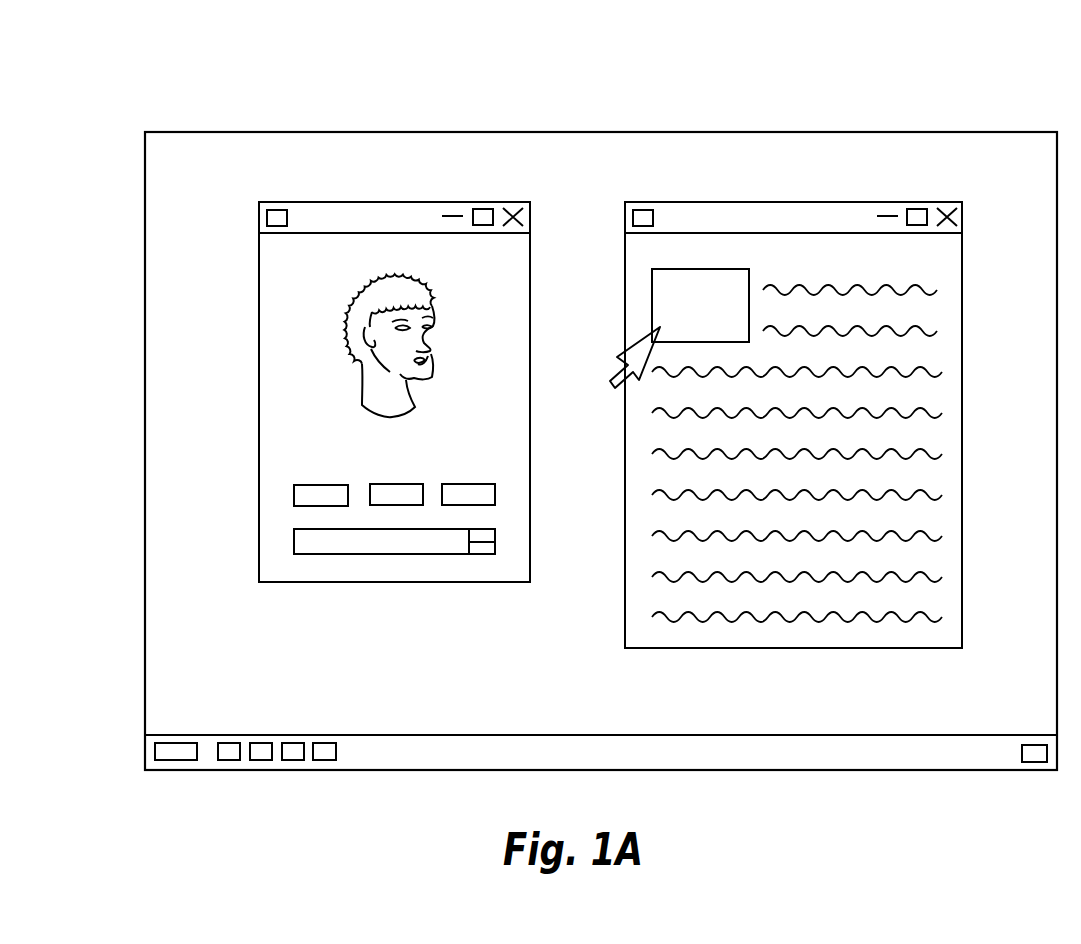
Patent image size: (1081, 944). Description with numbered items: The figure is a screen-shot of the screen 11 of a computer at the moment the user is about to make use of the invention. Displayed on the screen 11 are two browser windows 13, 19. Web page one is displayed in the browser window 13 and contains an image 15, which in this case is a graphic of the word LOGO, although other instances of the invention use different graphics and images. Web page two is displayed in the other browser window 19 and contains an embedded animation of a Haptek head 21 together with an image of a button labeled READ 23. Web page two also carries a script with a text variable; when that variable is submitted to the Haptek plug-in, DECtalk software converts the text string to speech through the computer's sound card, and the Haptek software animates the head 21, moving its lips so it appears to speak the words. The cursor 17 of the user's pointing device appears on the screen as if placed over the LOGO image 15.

The screen 11 is at (204, 157).
The browser window 13 is at (805, 288).
The image 15 is at (710, 278).
The cursor 17 is at (633, 340).
The browser window 19 is at (455, 268).
The Haptek head 21 is at (378, 290).
The button labeled READ 23 is at (311, 483).